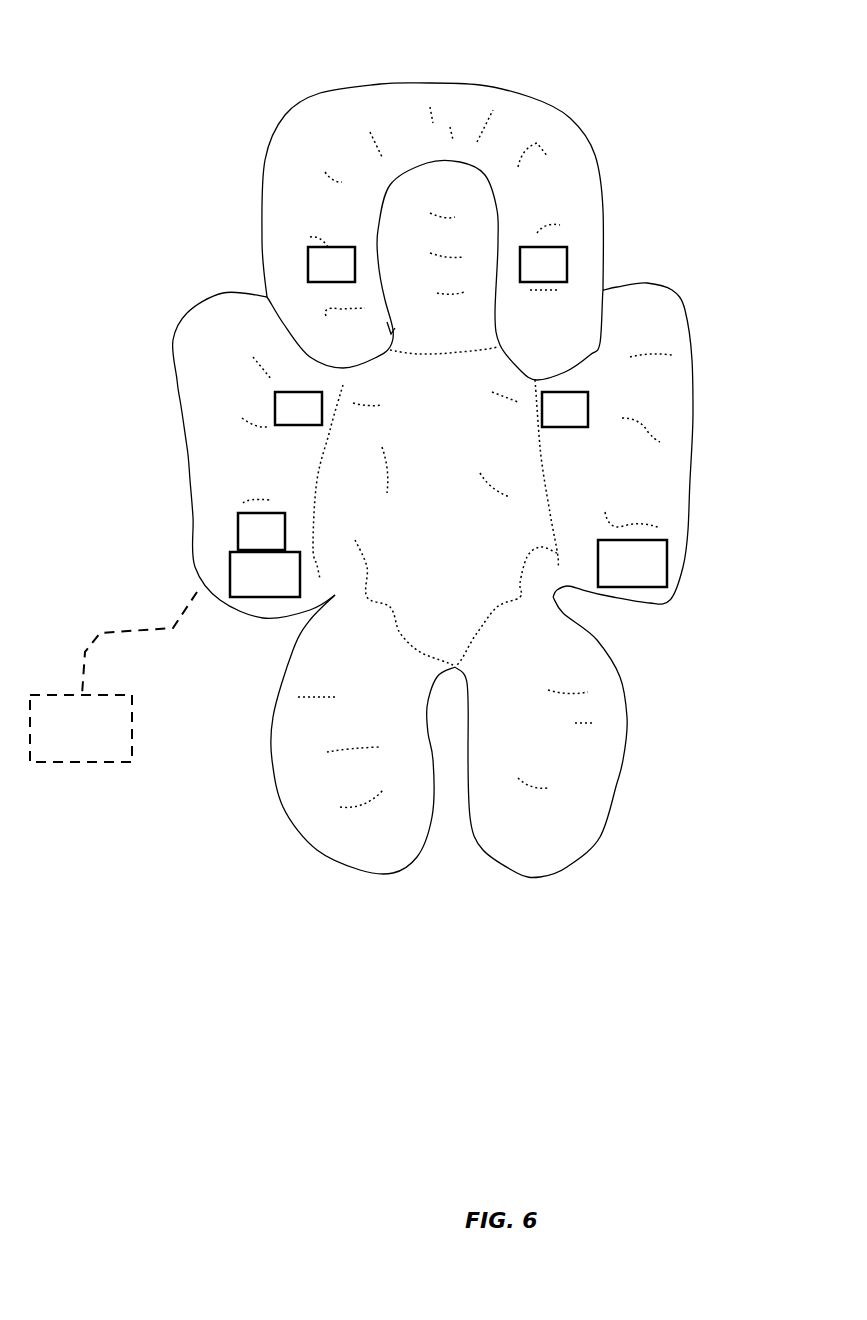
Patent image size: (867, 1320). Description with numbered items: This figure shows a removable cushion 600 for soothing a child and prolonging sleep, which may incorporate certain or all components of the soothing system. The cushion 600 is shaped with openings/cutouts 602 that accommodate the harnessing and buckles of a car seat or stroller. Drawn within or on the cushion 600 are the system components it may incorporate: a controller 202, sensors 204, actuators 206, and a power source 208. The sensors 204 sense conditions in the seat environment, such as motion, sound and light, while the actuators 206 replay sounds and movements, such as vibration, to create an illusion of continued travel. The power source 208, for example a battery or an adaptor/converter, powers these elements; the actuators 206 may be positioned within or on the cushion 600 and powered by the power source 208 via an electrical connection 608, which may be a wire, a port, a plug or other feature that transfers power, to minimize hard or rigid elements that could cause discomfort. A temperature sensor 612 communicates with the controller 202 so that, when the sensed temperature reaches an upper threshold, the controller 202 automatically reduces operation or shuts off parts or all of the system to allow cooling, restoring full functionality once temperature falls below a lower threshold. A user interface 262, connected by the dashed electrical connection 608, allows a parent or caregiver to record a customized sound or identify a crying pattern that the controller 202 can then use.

The removable cushion 600 is at (158, 72).
The openings/cutouts 602 is at (222, 257).
The sensor 204 is at (431, 409).
The actuator 206 is at (437, 264).
The power source 208 is at (632, 563).
The controller 202 is at (265, 574).
The temperature sensor 612 is at (261, 531).
The electrical connection 608 is at (100, 633).
The user interface 262 is at (81, 728).